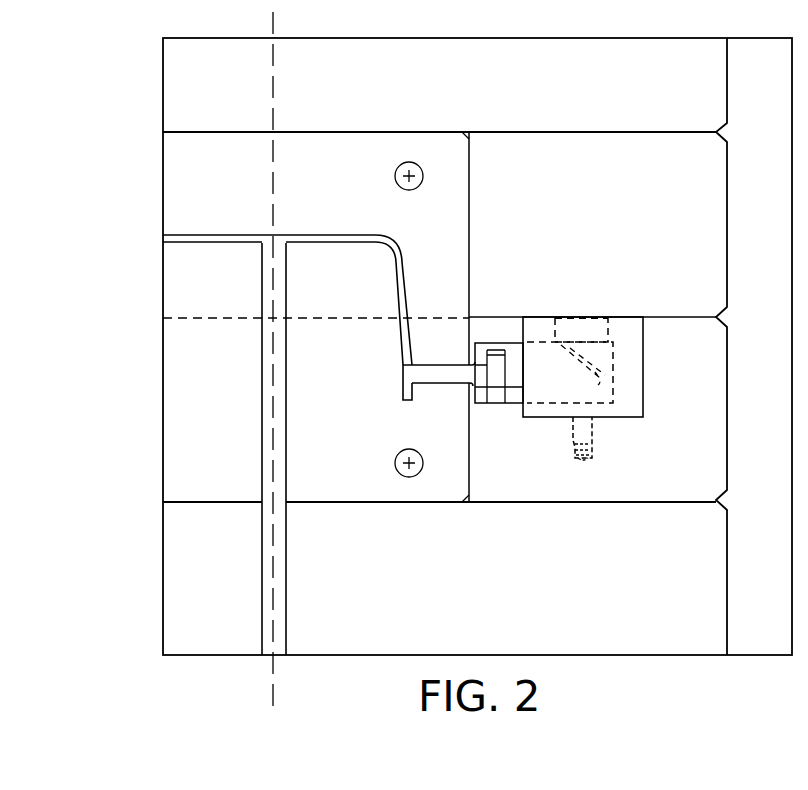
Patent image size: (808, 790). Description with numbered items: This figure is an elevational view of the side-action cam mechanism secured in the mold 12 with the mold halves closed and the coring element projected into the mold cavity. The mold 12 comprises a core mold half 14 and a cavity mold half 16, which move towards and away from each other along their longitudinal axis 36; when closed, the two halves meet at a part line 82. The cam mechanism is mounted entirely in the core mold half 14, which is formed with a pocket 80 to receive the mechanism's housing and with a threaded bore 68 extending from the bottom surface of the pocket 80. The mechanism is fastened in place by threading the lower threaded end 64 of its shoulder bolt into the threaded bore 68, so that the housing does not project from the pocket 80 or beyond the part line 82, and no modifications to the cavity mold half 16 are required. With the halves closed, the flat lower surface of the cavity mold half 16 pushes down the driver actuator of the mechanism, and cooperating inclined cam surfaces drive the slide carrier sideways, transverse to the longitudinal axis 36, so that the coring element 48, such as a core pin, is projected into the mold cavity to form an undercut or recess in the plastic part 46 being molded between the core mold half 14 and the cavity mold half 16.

The mold 12 is at (130, 106).
The core mold half 14 is at (710, 400).
The cavity mold half 16 is at (708, 272).
The longitudinal axis 36 is at (274, 712).
The plastic part 46 is at (396, 238).
The coring element 48 is at (448, 372).
The lower threaded end 64 is at (598, 425).
The threaded bore 68 is at (594, 442).
The pocket 80 is at (638, 355).
The part line 82 is at (695, 317).